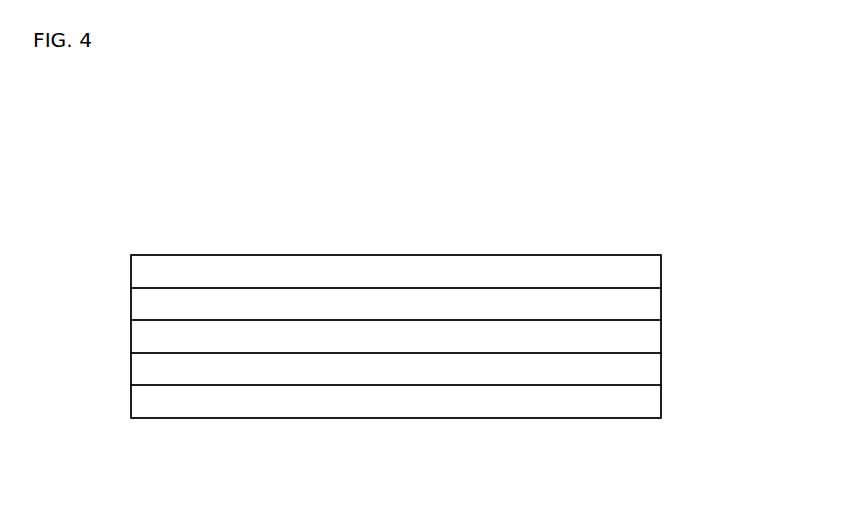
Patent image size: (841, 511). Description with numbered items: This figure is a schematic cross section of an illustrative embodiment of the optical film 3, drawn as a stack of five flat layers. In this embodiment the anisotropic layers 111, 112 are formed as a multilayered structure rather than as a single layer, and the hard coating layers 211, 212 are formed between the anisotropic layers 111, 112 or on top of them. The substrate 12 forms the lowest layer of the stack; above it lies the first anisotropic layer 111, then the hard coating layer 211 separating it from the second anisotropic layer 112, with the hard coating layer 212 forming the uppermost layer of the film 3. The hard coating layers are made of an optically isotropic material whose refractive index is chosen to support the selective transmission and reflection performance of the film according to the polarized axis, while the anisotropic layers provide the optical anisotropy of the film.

The film 3 is at (170, 213).
The hard coating layer 212 is at (417, 270).
The anisotropic layer 112 is at (641, 307).
The hard coating layer 211 is at (148, 343).
The anisotropic layer 111 is at (147, 367).
The substrate 12 is at (443, 410).